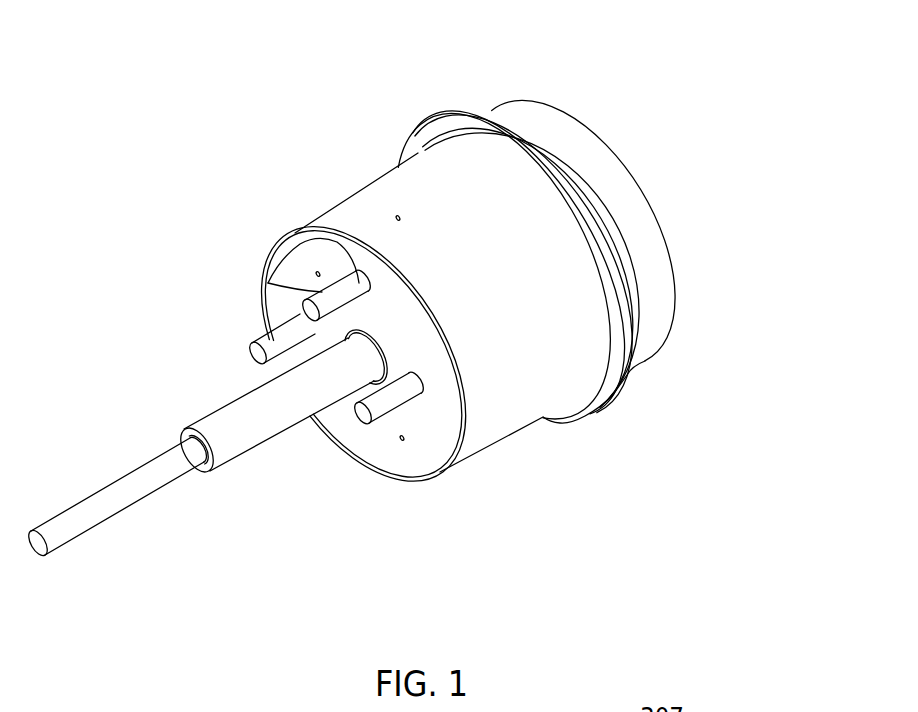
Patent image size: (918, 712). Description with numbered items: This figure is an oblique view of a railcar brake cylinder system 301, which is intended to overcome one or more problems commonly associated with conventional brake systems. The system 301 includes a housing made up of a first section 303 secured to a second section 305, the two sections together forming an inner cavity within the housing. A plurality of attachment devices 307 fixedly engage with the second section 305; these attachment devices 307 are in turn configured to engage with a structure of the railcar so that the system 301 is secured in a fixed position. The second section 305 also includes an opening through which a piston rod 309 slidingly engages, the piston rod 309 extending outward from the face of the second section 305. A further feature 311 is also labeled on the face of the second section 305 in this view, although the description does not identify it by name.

The brake cylinder system 301 is at (670, 115).
The first section 303 is at (645, 361).
The second section 305 is at (507, 440).
The attachment devices 307 is at (307, 230).
The piston rod 309 is at (127, 512).
The raised key feature on front face 311 is at (267, 282).